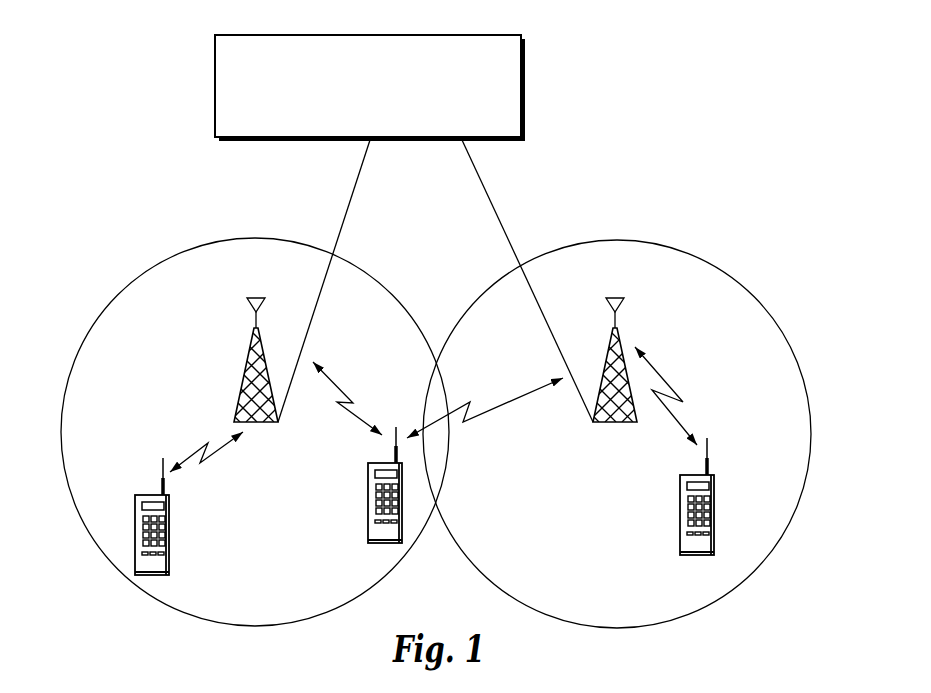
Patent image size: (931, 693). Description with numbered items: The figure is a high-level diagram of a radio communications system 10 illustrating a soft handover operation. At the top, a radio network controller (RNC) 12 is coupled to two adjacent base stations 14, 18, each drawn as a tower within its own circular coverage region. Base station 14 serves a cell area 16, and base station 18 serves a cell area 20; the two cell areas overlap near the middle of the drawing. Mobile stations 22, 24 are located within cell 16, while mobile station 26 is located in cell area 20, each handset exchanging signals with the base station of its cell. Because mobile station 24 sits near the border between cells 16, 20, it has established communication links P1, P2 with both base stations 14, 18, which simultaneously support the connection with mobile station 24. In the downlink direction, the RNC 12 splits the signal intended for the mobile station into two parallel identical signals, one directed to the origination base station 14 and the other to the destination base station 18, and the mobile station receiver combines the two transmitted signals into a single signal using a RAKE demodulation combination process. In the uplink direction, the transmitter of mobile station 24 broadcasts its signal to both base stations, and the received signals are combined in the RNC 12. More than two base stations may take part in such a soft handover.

The radio communications system 10 is at (724, 97).
The radio network controller (RNC) 12 is at (525, 97).
The base station 14 is at (245, 371).
The cell area 16 is at (160, 265).
The base station 18 is at (619, 336).
The cell area 20 is at (742, 285).
The mobile station 22 is at (171, 532).
The mobile station 24 is at (369, 502).
The mobile station 26 is at (681, 502).
The communication link P1 is at (343, 382).
The communication link P2 is at (505, 405).